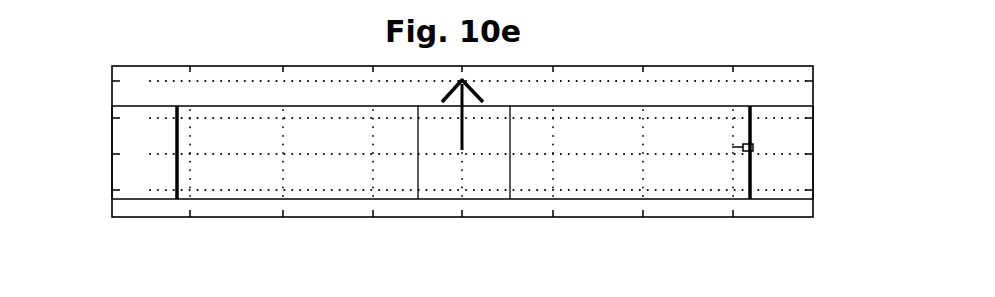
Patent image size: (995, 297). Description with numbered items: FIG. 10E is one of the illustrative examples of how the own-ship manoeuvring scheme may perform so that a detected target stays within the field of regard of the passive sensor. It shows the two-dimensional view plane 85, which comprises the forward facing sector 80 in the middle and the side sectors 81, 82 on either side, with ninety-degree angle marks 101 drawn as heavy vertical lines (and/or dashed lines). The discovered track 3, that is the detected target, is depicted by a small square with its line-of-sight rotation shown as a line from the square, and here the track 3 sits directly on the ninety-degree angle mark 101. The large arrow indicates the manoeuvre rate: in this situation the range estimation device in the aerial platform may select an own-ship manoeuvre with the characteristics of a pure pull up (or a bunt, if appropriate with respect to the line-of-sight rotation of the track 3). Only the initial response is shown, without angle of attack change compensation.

The two-dimensional view plane 85 is at (655, 66).
The forward facing sector 80 is at (440, 188).
The side sector 81 is at (132, 190).
The side sector 82 is at (718, 188).
The 90° angle mark 101 is at (168, 112).
The track 3 is at (766, 135).